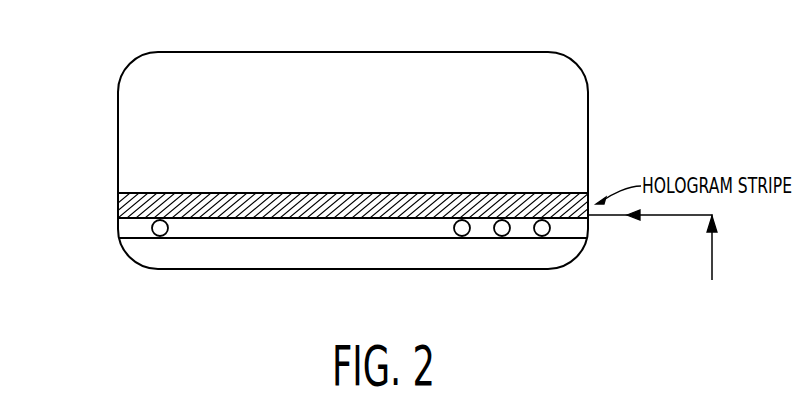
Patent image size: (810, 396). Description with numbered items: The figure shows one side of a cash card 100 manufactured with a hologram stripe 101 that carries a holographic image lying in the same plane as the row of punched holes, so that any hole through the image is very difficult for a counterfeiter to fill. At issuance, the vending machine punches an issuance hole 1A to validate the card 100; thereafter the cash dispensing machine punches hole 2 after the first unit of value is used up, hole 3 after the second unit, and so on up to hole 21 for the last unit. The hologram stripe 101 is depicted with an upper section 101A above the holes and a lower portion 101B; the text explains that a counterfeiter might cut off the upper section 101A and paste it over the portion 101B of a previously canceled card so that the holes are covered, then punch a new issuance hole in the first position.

The card 100 is at (163, 87).
The hologram stripe 101 is at (60, 152).
The top section of the hologram stripe 101A is at (123, 201).
The portion of the hologram stripe 101B is at (137, 228).
The hole 21 is at (160, 236).
The hole 3 is at (462, 236).
The hole 2 is at (502, 236).
The issuance hole 1A is at (542, 236).